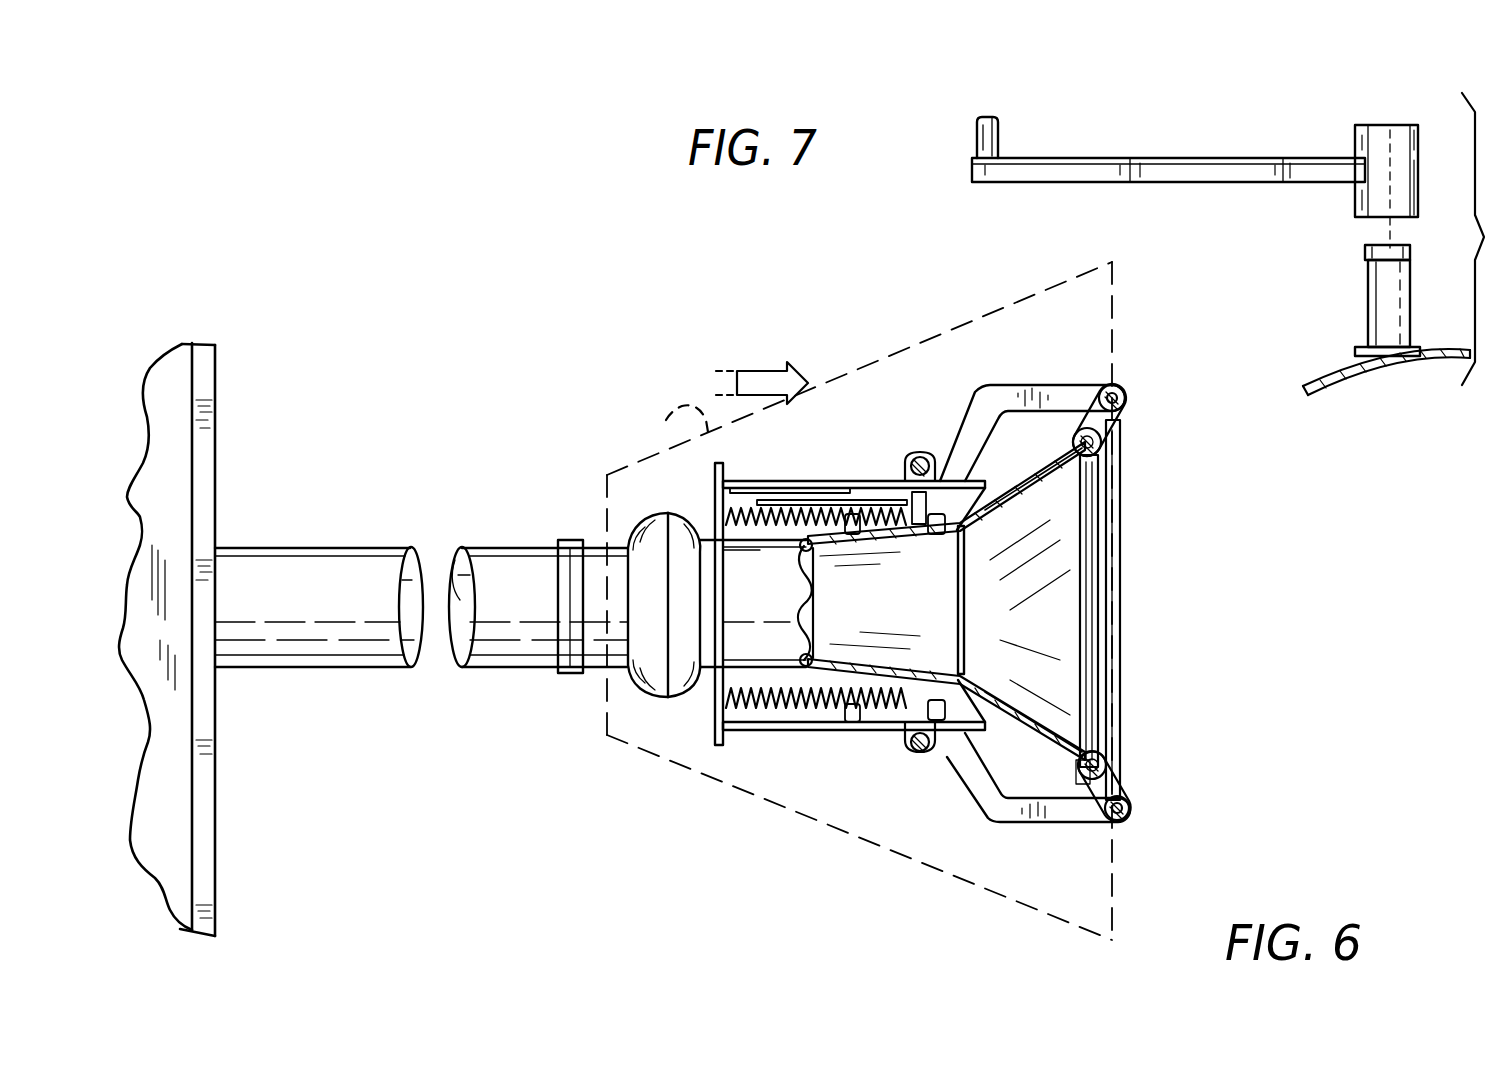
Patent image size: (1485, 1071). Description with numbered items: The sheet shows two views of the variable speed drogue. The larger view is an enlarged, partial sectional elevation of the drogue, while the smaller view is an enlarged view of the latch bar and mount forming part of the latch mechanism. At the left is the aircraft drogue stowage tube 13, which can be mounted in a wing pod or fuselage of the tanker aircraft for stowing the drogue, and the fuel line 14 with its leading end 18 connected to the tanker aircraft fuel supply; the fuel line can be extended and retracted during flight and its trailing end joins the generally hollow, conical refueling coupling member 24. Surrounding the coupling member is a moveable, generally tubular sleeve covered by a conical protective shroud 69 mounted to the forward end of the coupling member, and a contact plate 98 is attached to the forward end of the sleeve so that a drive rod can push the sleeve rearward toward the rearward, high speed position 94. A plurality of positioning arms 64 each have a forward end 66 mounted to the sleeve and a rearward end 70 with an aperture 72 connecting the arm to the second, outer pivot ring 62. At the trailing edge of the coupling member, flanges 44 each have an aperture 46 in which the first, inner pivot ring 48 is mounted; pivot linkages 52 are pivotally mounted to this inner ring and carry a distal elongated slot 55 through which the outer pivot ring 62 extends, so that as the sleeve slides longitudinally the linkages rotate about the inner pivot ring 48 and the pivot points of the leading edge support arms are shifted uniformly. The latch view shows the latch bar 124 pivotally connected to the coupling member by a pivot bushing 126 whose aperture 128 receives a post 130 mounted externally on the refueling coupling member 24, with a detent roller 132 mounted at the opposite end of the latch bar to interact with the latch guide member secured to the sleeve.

In FIG. 6, the aircraft drogue stowage tube 13 is at (216, 458).
In FIG. 6, the leading end 18 is at (370, 548).
In FIG. 6, the fuel line 14 is at (542, 548).
In FIG. 6, the contact plate 98 is at (715, 718).
In FIG. 6, the high speed position 94 is at (762, 369).
In FIG. 6, the protective shroud 69 is at (668, 415).
In FIG. 6, the forward end 66 is at (912, 476).
In FIG. 6, the positioning arms 64 is at (1012, 386).
In FIG. 6, the rearward end 70 is at (1090, 388).
In FIG. 6, the flanges 44 is at (1073, 442).
In FIG. 6, the aperture 72 is at (1126, 402).
In FIG. 6, the distal elongated slot 55 is at (1110, 414).
In FIG. 6, the aperture 46 is at (1090, 452).
In FIG. 6, the first, inner pivot ring 48 is at (1090, 683).
In FIG. 6, the second, outer pivot ring 62 is at (1116, 604).
In FIG. 6, the pivot linkages 52 is at (1108, 778).
In FIG. 7, the latch bar 124 is at (1176, 168).
In FIG. 7, the detent roller 132 is at (998, 148).
In FIG. 7, the pivot bushing 126 is at (1390, 125).
In FIG. 7, the aperture 128 is at (1374, 203).
In FIG. 7, the post 130 is at (1374, 295).
In FIG. 7, the refueling coupling member 24 is at (1330, 366).